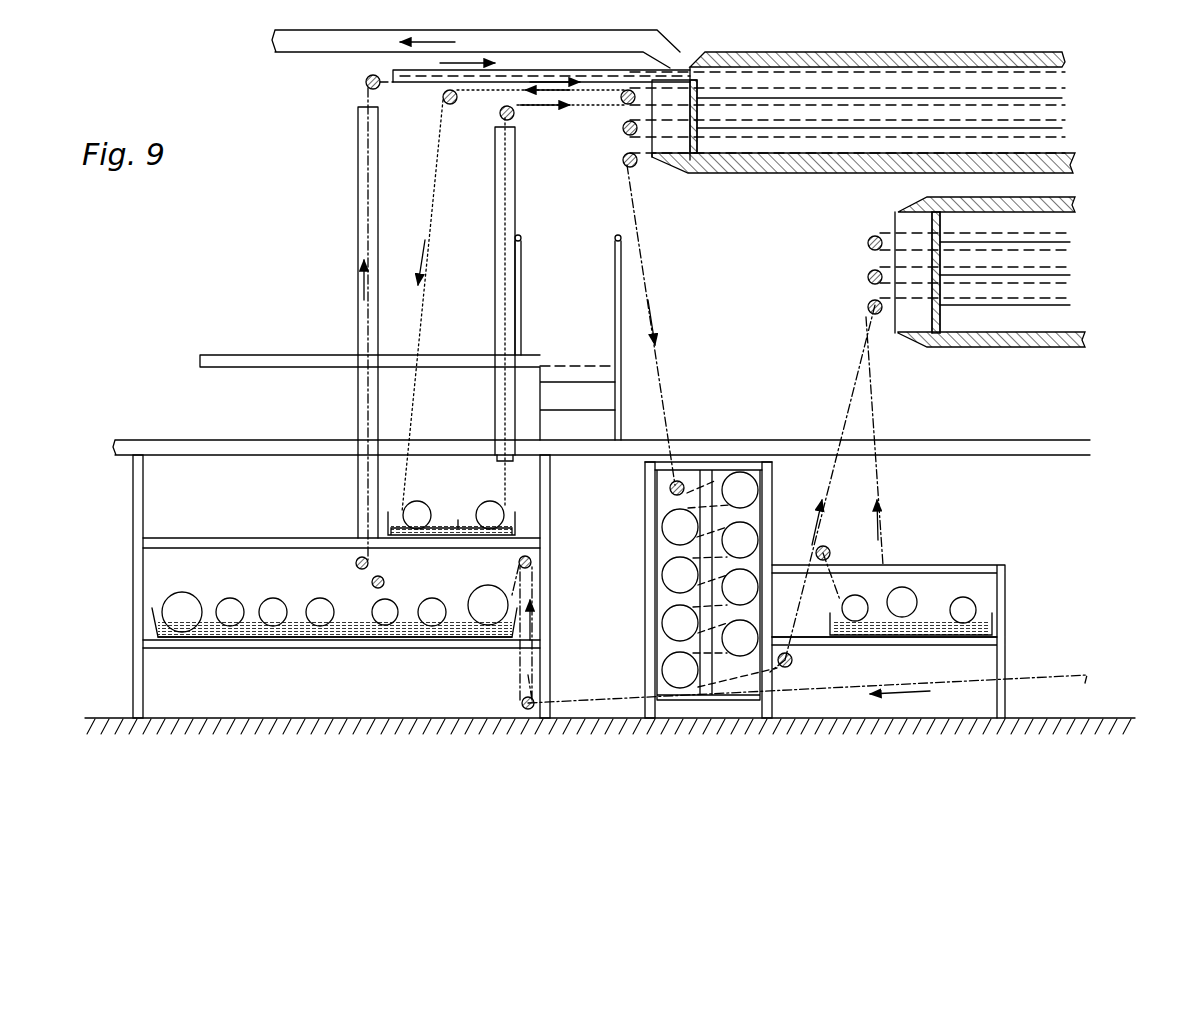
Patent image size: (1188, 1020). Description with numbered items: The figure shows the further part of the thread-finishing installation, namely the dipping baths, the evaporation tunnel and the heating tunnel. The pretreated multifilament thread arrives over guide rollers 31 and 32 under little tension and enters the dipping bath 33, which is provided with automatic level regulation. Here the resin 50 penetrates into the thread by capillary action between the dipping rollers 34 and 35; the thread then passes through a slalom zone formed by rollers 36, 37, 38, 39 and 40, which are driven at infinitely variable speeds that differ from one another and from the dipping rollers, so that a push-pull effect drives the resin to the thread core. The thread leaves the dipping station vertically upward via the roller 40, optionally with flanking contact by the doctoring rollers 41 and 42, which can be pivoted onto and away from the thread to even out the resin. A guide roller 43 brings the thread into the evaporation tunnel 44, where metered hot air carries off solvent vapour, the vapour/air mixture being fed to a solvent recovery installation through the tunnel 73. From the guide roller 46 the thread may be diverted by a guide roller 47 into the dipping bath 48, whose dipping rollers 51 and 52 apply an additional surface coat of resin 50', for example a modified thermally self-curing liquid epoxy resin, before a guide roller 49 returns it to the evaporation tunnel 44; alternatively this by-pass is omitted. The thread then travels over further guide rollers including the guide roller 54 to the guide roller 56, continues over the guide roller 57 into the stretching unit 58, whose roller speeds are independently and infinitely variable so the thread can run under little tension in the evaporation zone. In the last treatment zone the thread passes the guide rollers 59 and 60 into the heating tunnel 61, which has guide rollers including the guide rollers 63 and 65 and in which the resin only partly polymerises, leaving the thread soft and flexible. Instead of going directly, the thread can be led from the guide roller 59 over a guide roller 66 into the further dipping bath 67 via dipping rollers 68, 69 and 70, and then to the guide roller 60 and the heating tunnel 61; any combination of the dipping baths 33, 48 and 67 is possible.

The guide roller 31 is at (521, 702).
The guide roller 32 is at (532, 565).
The dipping bath 33 is at (380, 640).
The dipping roller 34 is at (489, 600).
The dipping roller 35 is at (180, 605).
The slalom roller 36 is at (230, 605).
The slalom roller 37 is at (273, 605).
The slalom roller 38 is at (320, 605).
The slalom roller 39 is at (437, 605).
The roller 40 is at (388, 605).
The doctoring roller 41 is at (375, 577).
The doctoring roller 42 is at (358, 558).
The guide roller 43 is at (367, 88).
The evaporation tunnel 44 is at (755, 175).
The guide roller 46 is at (623, 102).
The guide roller 47 is at (445, 102).
The dipping bath 48 is at (458, 512).
The guide roller 49 is at (502, 118).
The resin 50 is at (334, 655).
The resin 50' is at (505, 527).
The dipping roller 51 is at (416, 512).
The dipping roller 52 is at (490, 512).
The guide roller 54 is at (625, 133).
The guide roller 56 is at (625, 165).
The guide roller 57 is at (669, 490).
The stretching unit 58 is at (690, 706).
The guide roller 59 is at (793, 661).
The guide roller 60 is at (867, 310).
The heating tunnel 61 is at (988, 348).
The guide roller 63 is at (867, 277).
The guide roller 65 is at (867, 242).
The guide roller 66 is at (826, 548).
The dipping bath 67 is at (890, 642).
The dipping roller 68 is at (858, 605).
The dipping roller 69 is at (965, 607).
The dipping roller 70 is at (905, 600).
The tunnel 73 is at (295, 40).